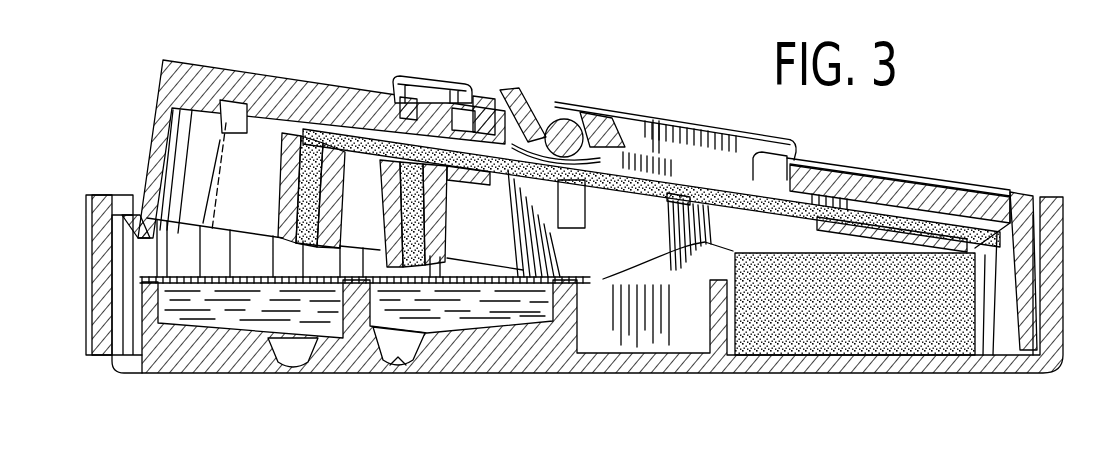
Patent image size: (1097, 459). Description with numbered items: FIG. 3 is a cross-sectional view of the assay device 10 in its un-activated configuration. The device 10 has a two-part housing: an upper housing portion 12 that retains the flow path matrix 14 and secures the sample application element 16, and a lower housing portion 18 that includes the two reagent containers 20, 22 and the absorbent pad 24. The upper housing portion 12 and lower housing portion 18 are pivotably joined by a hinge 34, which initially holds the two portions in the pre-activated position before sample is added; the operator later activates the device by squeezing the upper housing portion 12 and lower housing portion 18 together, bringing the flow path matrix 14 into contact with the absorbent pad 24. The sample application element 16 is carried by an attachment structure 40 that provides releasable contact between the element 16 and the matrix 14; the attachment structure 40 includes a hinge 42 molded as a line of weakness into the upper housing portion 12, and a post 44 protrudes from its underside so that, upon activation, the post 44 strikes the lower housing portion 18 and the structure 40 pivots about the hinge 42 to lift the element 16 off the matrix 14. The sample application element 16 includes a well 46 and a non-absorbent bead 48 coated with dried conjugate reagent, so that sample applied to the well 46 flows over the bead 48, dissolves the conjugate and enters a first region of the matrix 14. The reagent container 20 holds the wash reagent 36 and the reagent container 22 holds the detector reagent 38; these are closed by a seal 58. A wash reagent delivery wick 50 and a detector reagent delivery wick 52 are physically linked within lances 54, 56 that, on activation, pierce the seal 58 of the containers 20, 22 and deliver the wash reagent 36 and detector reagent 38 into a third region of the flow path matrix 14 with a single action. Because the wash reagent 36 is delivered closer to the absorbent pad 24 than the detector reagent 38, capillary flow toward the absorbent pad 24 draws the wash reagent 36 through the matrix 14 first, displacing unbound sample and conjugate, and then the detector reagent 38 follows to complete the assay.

The device 10 is at (122, 66).
The upper housing portion 12 is at (140, 118).
The flow path matrix 14 is at (677, 160).
The sample application element 16 is at (523, 88).
The lower housing portion 18 is at (78, 266).
The reagent container 20 is at (453, 340).
The reagent container 22 is at (205, 343).
The absorbent pad 24 is at (910, 340).
The hinge 34 is at (1032, 330).
The wash reagent 36 is at (503, 297).
The detector reagent 38 is at (182, 320).
The attachment structure 40 is at (475, 92).
The hinge 42 is at (425, 108).
The post 44 is at (580, 202).
The well 46 is at (555, 107).
The bead 48 is at (573, 110).
The wash reagent delivery wick 50 is at (440, 217).
The detector reagent delivery wick 52 is at (283, 152).
The lance 54 is at (392, 255).
The lance 56 is at (293, 248).
The seal 58 is at (243, 283).